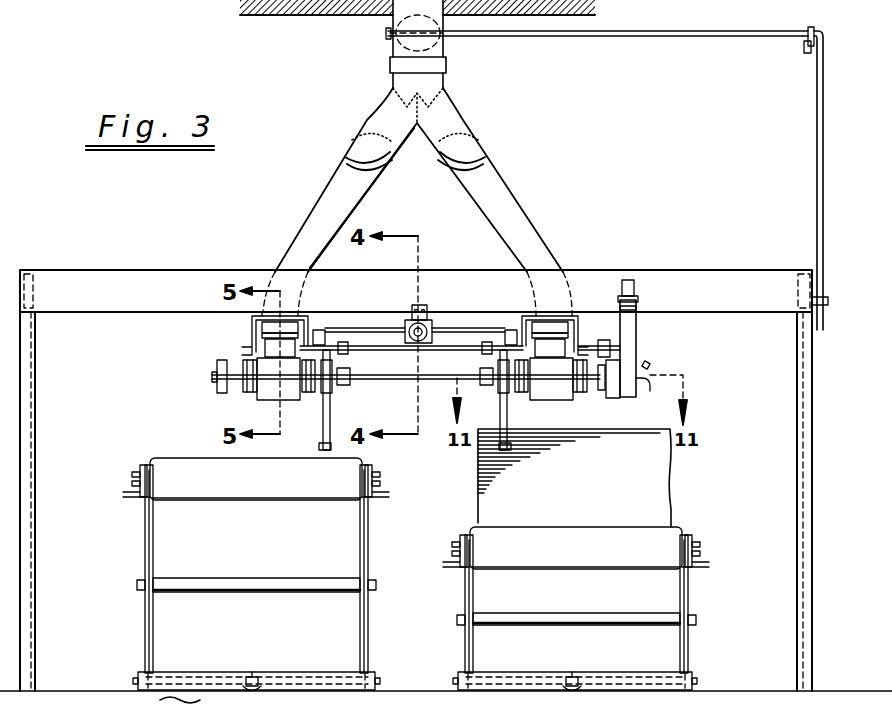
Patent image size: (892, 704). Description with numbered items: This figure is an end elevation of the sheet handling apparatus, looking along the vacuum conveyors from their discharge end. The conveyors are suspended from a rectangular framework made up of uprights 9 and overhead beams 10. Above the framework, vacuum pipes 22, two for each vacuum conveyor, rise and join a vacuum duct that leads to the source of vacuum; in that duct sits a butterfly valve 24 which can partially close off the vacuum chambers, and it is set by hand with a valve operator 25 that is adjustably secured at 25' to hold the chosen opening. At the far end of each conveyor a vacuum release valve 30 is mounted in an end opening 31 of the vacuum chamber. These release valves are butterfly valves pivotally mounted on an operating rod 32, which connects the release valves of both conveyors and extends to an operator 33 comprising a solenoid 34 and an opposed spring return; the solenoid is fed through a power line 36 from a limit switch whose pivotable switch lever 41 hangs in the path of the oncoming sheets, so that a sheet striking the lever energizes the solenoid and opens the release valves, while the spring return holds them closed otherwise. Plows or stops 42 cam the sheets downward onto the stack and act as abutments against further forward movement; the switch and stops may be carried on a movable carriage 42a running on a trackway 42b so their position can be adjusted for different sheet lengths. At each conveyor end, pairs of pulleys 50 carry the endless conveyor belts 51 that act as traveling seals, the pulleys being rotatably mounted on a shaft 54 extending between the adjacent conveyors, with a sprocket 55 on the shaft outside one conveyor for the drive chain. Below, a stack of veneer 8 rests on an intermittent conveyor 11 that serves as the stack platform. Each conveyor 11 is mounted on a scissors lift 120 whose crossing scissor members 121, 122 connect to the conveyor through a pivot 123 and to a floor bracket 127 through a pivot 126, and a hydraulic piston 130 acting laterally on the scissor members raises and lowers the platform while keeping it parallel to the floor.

The stack of veneer 8 is at (612, 428).
The uprights 9 is at (33, 426).
The overhead beams 10 is at (27, 270).
The intermittent conveyor 11 is at (168, 457).
The vacuum pipes 22 is at (345, 201).
The butterfly valve 24 is at (394, 52).
The valve operator 25 is at (604, 178).
The adjustable securing point 25' is at (797, 325).
The vacuum release valve 30 is at (272, 345).
The end opening 31 is at (274, 353).
The operating rod 32 is at (370, 352).
The operator 33 is at (642, 329).
The solenoid 34 is at (632, 301).
The power line 36 is at (654, 376).
The switch lever 41 is at (333, 407).
The plows or stops 42 is at (331, 420).
The carriage 42a is at (432, 330).
The trackway 42b is at (424, 337).
The pulleys 50 is at (238, 389).
The endless conveyor belts 51 is at (248, 393).
The shaft 54 is at (275, 381).
The sprocket 55 is at (601, 389).
The scissors lift 120 is at (374, 558).
The scissor member 121 is at (153, 549).
The scissor member 122 is at (145, 627).
The pivot 123 is at (128, 486).
The pivot 126 is at (138, 680).
The floor bracket 127 is at (343, 678).
The hydraulic piston 130 is at (252, 672).